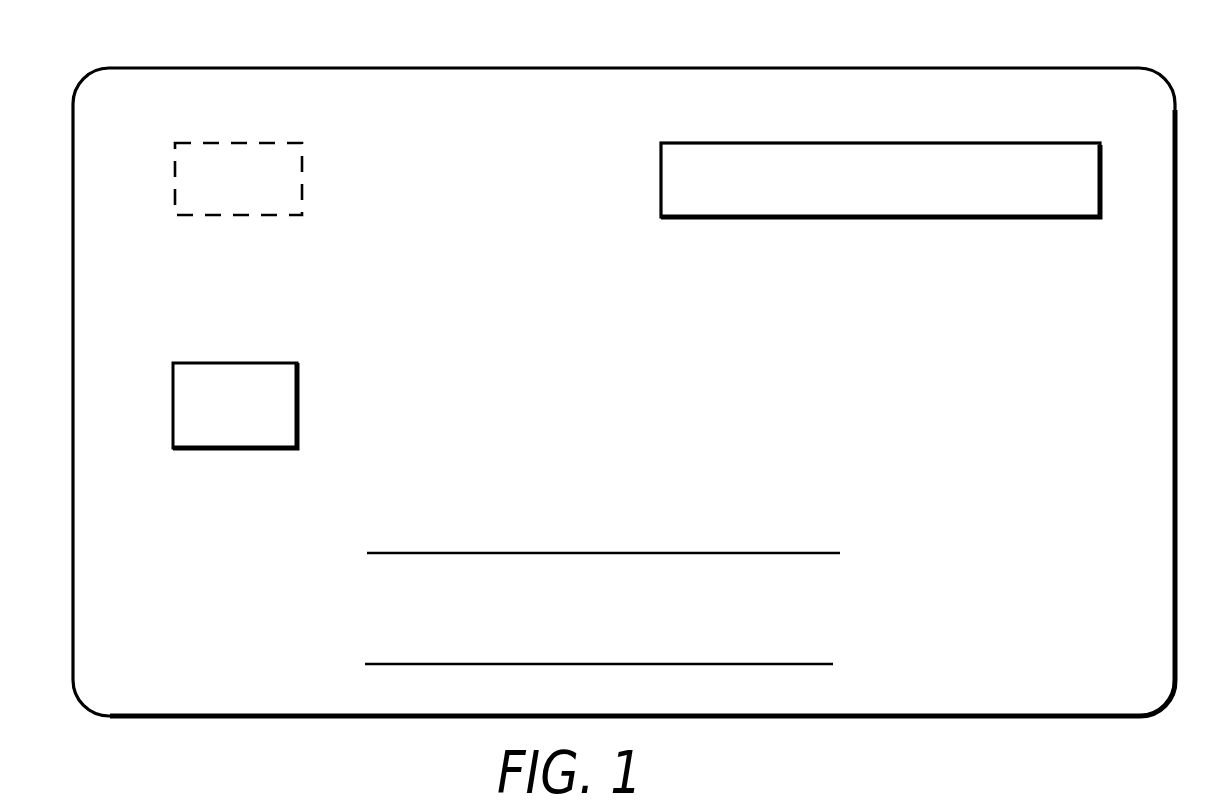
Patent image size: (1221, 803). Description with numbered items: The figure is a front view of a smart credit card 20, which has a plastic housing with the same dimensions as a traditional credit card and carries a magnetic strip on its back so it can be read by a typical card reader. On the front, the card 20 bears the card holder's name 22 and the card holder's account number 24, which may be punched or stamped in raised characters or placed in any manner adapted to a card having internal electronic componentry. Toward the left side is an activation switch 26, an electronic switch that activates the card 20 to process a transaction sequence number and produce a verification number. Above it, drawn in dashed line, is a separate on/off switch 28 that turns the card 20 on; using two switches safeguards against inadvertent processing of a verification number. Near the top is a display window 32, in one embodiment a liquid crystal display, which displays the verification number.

The credit card 20 is at (718, 69).
The card holder's name 22 is at (837, 553).
The card holder's account number 24 is at (832, 664).
The activation switch 26 is at (297, 407).
The on/off switch 28 is at (256, 143).
The display window 32 is at (1065, 142).